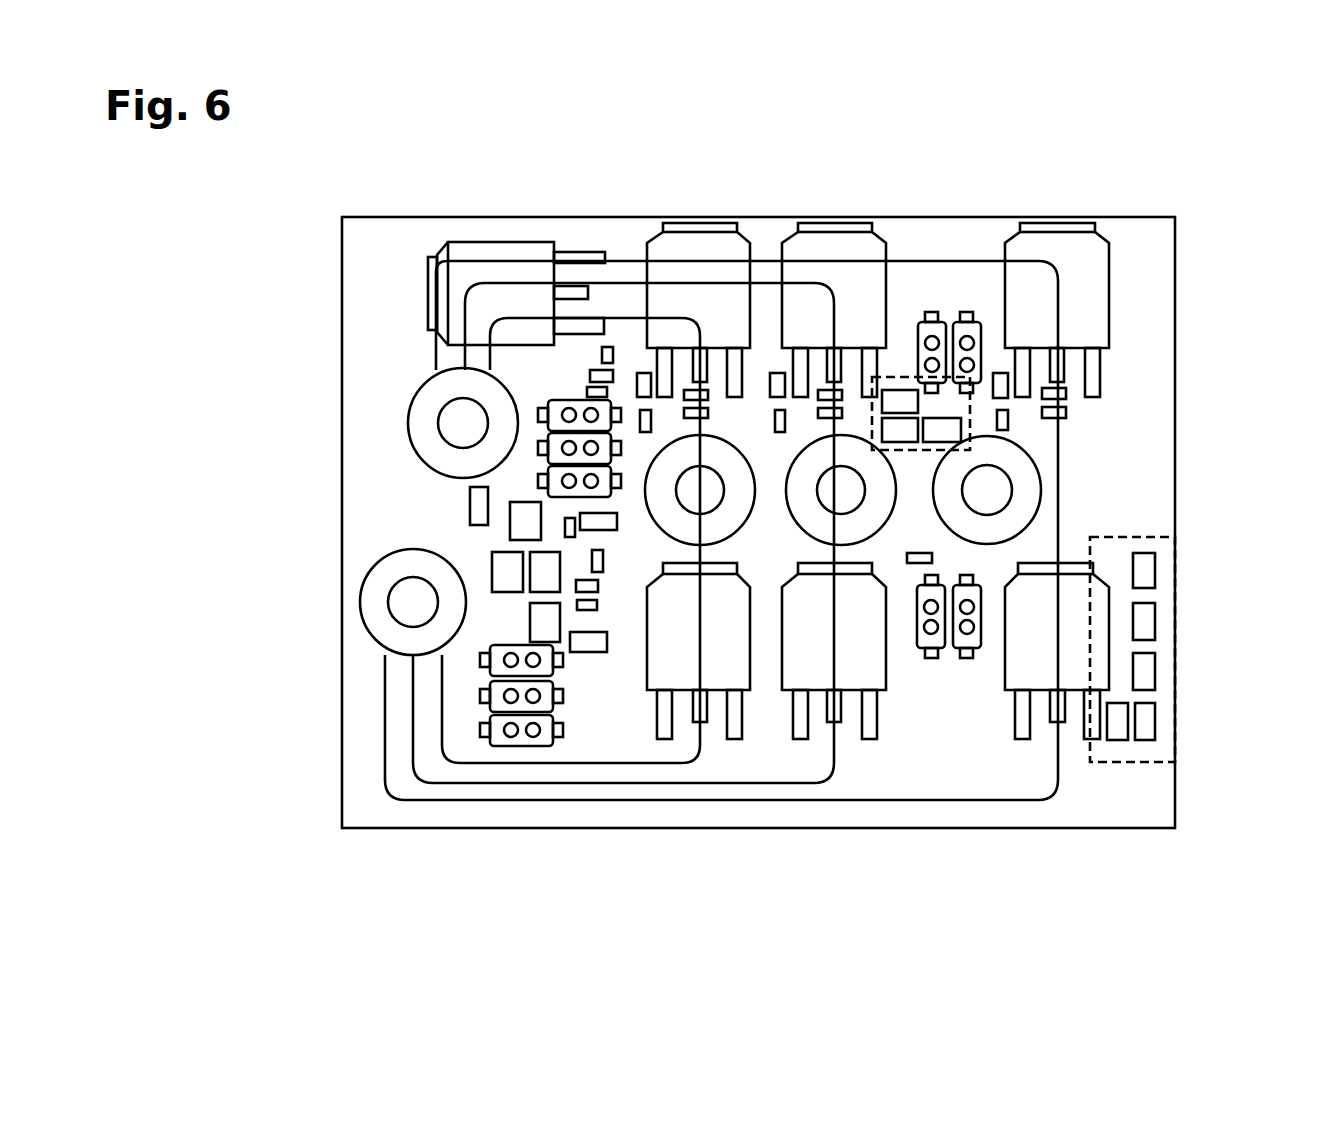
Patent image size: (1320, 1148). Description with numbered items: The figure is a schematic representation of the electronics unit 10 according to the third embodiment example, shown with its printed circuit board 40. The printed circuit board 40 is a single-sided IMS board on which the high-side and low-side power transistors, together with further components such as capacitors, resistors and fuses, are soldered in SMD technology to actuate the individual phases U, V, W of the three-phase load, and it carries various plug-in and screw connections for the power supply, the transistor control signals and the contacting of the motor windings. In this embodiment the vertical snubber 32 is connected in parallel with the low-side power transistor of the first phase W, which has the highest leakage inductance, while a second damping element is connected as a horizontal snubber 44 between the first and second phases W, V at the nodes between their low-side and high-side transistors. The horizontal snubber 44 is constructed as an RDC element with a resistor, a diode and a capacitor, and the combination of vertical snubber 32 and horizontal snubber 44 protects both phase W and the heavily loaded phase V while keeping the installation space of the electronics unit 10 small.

The electronics unit 10 is at (1212, 189).
The vertical snubber 32 is at (1174, 724).
The printed circuit board 40 is at (1128, 364).
The horizontal snubber 44 is at (1088, 330).
The phase U is at (642, 763).
The phase V is at (773, 783).
The phase W is at (578, 802).